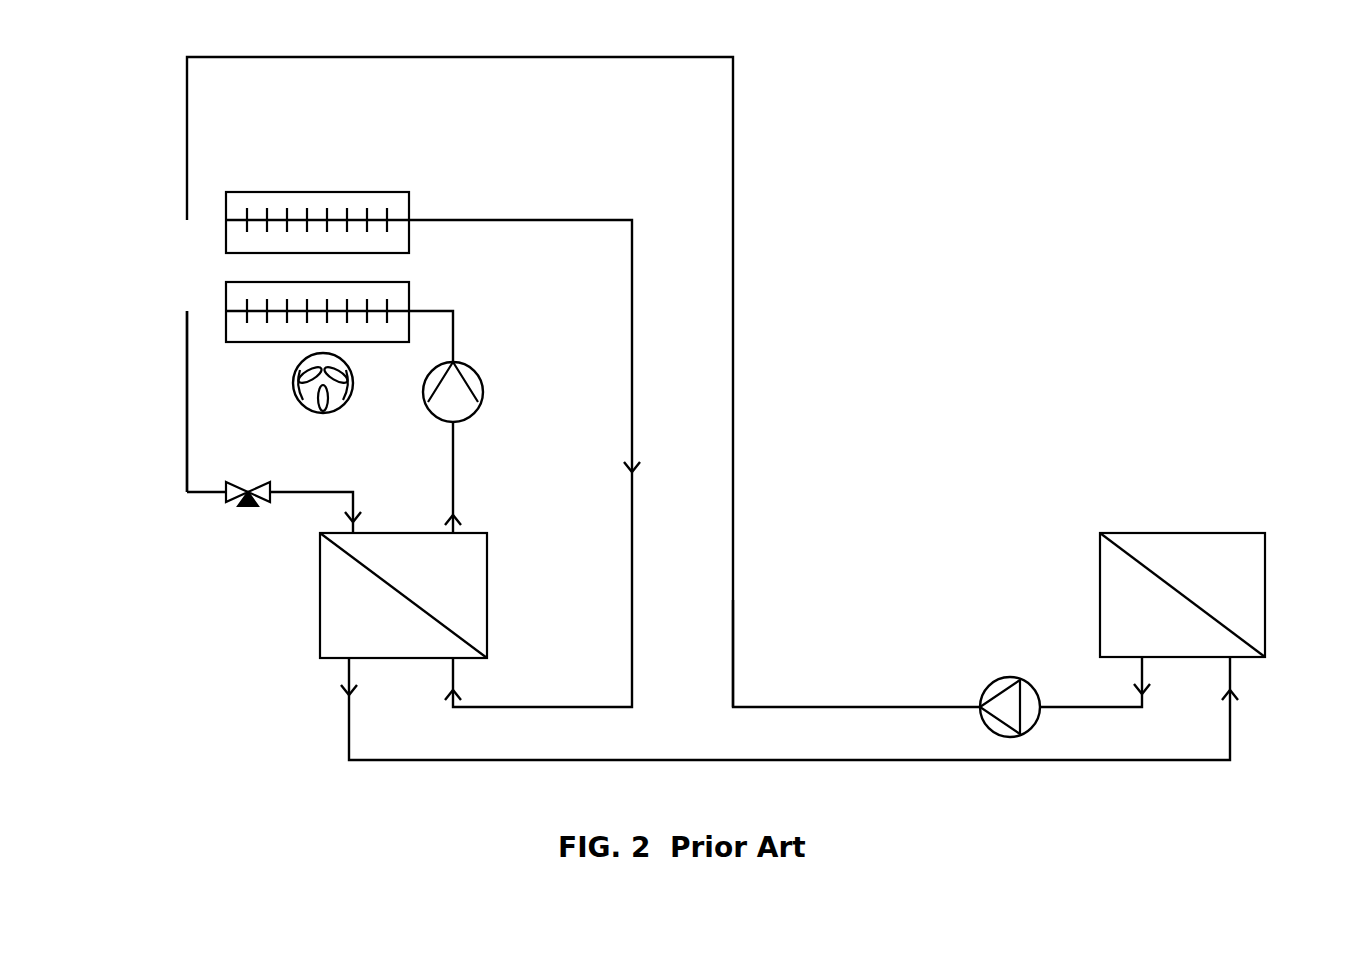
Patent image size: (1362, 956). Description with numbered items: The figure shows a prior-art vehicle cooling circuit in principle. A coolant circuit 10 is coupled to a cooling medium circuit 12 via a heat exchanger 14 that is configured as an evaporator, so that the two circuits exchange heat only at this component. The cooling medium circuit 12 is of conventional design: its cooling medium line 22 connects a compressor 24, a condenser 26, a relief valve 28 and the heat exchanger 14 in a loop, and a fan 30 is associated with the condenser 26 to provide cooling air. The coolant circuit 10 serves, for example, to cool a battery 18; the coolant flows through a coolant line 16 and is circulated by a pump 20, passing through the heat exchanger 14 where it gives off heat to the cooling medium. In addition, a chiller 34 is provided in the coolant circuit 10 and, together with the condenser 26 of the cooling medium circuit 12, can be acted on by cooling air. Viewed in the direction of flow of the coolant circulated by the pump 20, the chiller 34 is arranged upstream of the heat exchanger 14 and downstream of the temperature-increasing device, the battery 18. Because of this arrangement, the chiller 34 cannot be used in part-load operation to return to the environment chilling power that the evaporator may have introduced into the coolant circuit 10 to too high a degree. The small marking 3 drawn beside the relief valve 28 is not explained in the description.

The coolant circuit 10 is at (782, 548).
The cooling medium circuit 12 is at (170, 477).
The heat exchanger 14 is at (335, 613).
The coolant line 16 is at (1060, 760).
The battery 18 is at (1250, 607).
The pump 20 is at (997, 683).
The cooling medium line 22 is at (453, 483).
The compressor 24 is at (462, 412).
The condenser 26 is at (390, 303).
The relief valve 28 is at (234, 529).
The fan 30 is at (332, 405).
The chiller 34 is at (390, 213).
The valve port 3 is at (248, 514).